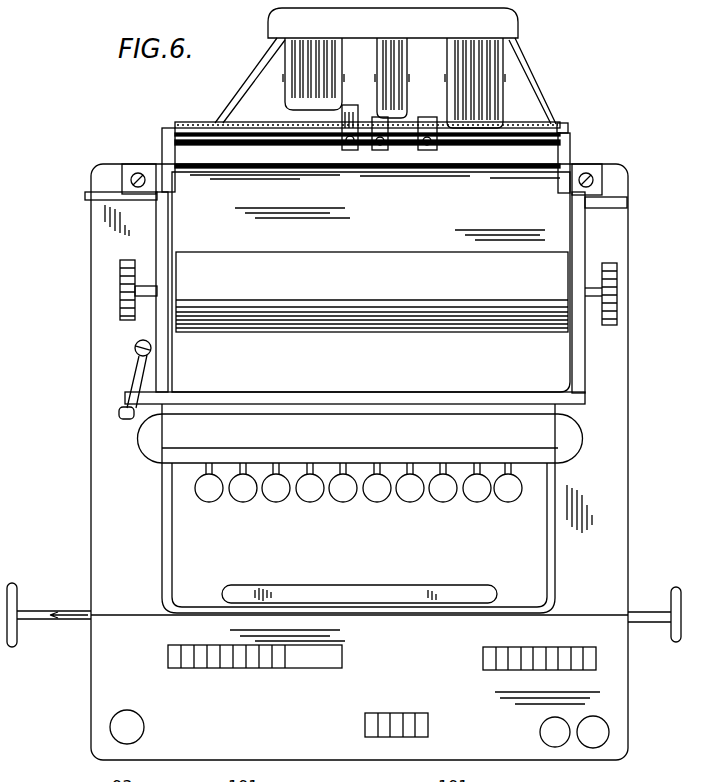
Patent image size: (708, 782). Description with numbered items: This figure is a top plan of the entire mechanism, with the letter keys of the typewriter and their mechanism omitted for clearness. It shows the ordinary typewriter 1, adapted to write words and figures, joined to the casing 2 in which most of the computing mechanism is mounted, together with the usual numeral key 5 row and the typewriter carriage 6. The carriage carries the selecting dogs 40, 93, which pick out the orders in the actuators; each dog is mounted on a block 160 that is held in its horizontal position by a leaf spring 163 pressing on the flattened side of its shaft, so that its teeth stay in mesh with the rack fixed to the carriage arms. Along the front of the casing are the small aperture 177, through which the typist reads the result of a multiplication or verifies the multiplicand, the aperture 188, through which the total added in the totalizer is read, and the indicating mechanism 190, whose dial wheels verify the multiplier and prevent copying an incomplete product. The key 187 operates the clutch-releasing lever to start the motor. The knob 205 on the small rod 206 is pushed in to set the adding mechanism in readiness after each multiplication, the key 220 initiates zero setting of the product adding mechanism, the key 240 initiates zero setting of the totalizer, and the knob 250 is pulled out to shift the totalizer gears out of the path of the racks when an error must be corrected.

The typewriter 1 is at (555, 562).
The casing 2 is at (628, 447).
The numeral key 5 is at (372, 502).
The typewriter carriage 6 is at (163, 150).
The dog 40 is at (428, 117).
The dog 93 is at (348, 105).
The block 160 is at (382, 150).
The leaf spring 163 is at (342, 146).
The aperture 177 is at (176, 668).
The key 187 is at (558, 745).
The aperture 188 is at (511, 670).
The indicating mechanism 190 is at (398, 713).
The knob 205 is at (17, 592).
The rod 206 is at (30, 620).
The key 220 is at (130, 722).
The key 240 is at (600, 735).
The knob 250 is at (676, 642).